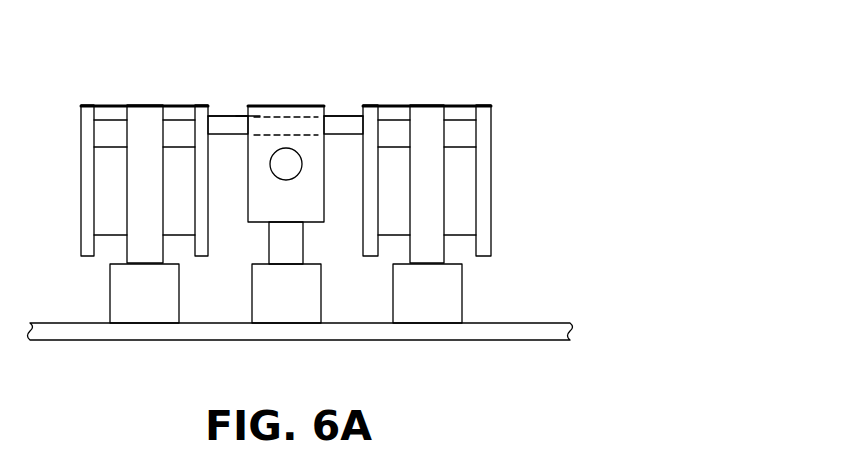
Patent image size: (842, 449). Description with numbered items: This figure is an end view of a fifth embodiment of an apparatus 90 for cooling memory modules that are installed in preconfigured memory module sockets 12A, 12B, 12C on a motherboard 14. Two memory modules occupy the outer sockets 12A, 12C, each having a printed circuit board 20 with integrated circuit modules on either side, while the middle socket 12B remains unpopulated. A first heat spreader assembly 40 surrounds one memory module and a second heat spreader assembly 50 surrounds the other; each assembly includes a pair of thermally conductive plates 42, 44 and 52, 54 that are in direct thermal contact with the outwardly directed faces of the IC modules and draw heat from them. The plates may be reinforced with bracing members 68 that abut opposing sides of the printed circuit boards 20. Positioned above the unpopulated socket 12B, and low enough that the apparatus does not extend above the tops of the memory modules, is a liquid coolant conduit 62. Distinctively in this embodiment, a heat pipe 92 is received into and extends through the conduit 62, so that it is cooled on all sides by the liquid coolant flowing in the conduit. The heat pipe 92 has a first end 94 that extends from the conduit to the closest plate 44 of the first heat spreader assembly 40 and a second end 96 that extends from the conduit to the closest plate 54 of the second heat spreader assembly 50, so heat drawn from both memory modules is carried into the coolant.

The memory module socket 12A is at (110, 280).
The memory module socket 12B is at (252, 311).
The memory module socket 12C is at (462, 290).
The motherboard 14 is at (557, 322).
The printed circuit board 20 is at (143, 110).
The first heat spreader assembly 40 is at (60, 120).
The thermally conductive plate 42 is at (80, 190).
The thermally conductive plate 44 is at (210, 205).
The second heat spreader assembly 50 is at (512, 122).
The thermally conductive plate 52 is at (492, 182).
The thermally conductive plate 54 is at (362, 205).
The liquid coolant conduit 62 is at (293, 113).
The bracing members 68 is at (103, 105).
The cooling apparatus 90 is at (500, 85).
The heat pipe 92 is at (246, 100).
The first end of heat pipe 94 is at (222, 115).
The second end of heat pipe 96 is at (337, 113).